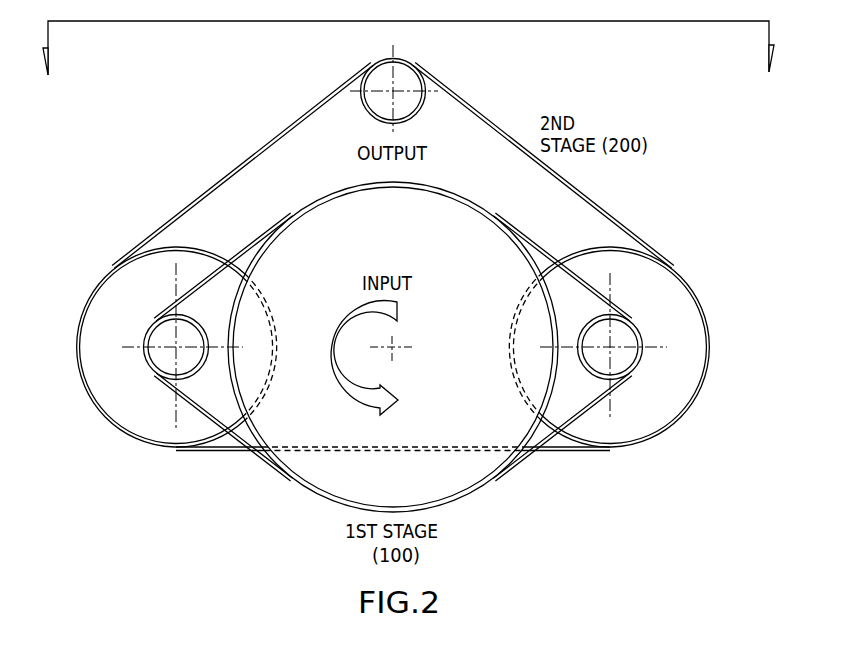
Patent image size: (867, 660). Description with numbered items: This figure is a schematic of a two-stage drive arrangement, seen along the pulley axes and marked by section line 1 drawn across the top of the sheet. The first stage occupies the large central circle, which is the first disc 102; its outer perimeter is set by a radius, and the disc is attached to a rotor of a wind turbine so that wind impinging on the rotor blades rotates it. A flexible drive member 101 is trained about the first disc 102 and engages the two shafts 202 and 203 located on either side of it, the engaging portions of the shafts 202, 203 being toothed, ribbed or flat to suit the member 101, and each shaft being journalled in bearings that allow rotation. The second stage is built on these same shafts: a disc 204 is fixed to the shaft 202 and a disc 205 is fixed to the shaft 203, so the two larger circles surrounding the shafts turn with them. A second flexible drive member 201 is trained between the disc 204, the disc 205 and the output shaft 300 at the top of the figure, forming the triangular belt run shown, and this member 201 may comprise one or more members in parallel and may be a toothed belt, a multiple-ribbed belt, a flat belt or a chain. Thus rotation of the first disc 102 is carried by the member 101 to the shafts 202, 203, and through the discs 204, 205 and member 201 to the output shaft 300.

The section line 1- 1 is at (414, 67).
The flexible drive member 101 is at (187, 400).
The first disc 102 is at (310, 460).
The flexible drive member 201 is at (606, 221).
The shaft 202 is at (620, 338).
The shaft 203 is at (165, 353).
The disc 204 is at (667, 382).
The disc 205 is at (128, 292).
The output shaft 300 is at (396, 87).